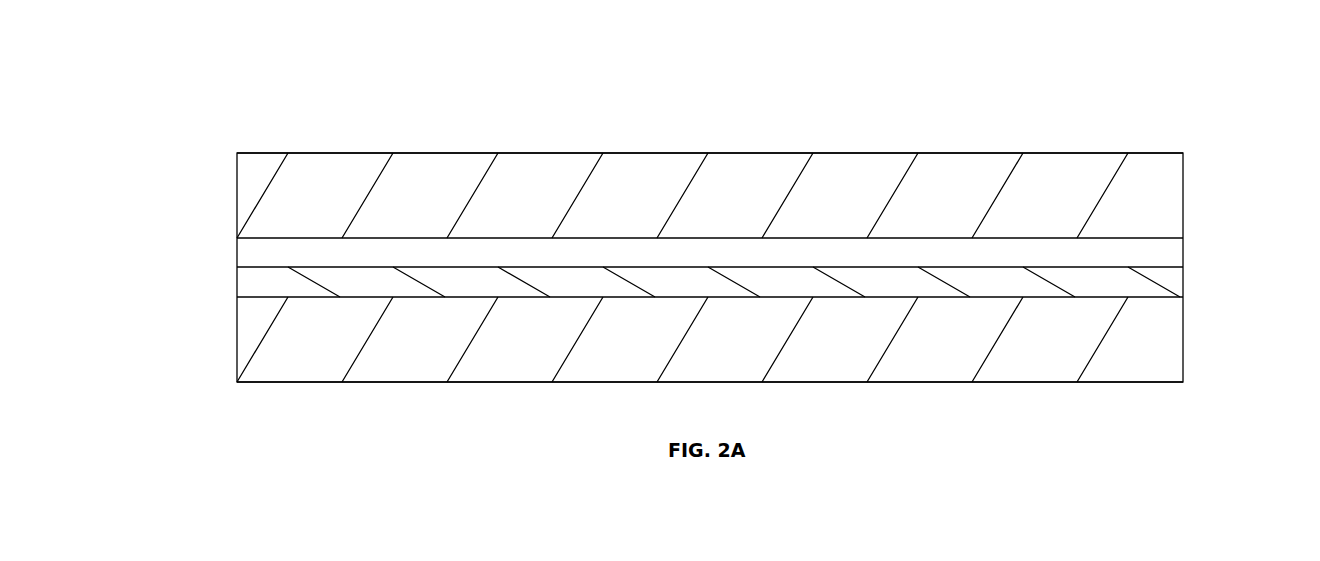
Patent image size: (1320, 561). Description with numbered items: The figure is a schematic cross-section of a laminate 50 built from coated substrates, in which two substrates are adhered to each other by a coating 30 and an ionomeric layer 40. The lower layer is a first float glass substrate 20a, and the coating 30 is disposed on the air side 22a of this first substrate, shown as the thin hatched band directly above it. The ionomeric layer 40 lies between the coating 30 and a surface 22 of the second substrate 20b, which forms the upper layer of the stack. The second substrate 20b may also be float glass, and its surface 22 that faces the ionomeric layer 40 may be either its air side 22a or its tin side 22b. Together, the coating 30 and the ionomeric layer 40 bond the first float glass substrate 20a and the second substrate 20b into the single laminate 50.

The laminate 50 is at (186, 95).
The second substrate 20b is at (237, 179).
The ionomeric layer 40 is at (1158, 252).
The coating 30 is at (272, 283).
The surface 22 is at (1133, 238).
The air side 22a is at (1150, 297).
The first float glass substrate 20a is at (1185, 330).
The tin side 22b is at (1147, 382).